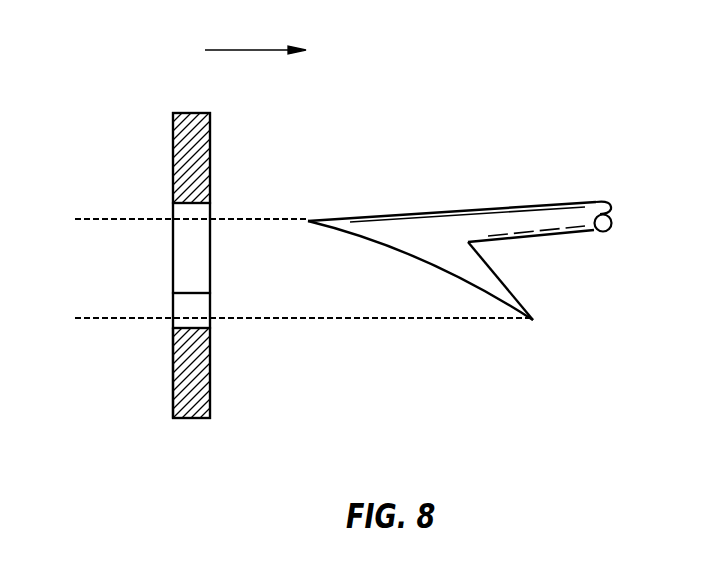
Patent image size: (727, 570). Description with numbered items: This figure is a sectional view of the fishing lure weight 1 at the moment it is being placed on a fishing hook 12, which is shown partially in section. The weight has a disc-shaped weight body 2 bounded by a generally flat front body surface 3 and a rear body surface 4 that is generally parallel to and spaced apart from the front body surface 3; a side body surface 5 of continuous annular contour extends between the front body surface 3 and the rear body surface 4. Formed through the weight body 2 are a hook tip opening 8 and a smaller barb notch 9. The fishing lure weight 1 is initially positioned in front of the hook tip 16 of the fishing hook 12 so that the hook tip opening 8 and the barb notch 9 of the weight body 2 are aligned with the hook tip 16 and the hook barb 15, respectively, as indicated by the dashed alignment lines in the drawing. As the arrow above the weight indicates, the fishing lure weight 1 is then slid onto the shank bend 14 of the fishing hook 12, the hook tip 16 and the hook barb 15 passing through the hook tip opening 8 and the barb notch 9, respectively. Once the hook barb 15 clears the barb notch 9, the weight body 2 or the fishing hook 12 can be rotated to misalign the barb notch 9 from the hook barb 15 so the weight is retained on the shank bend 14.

The fishing lure weight 1 is at (178, 88).
The weight body 2 is at (160, 146).
The front body surface 3 is at (210, 360).
The rear body surface 4 is at (173, 388).
The side body surface 5 is at (199, 420).
The hook tip opening 8 is at (190, 250).
The barb notch 9 is at (192, 305).
The fishing hook 12 is at (549, 188).
The shank bend 14 is at (567, 230).
The hook barb 15 is at (534, 320).
The hook tip 16 is at (308, 220).